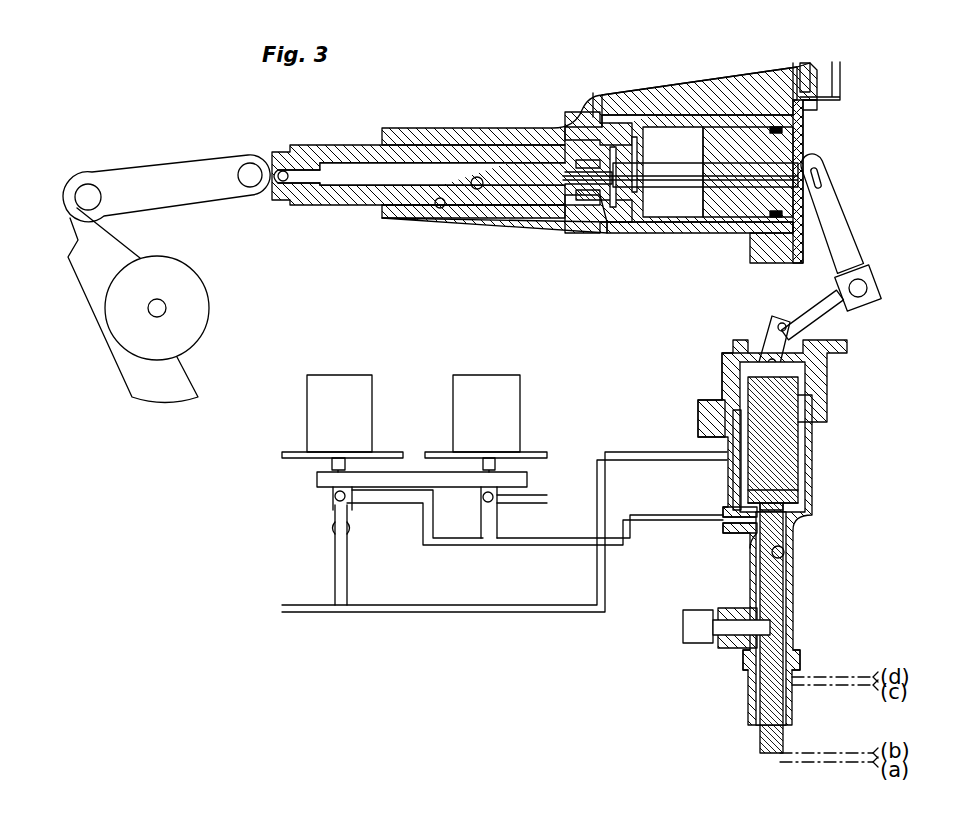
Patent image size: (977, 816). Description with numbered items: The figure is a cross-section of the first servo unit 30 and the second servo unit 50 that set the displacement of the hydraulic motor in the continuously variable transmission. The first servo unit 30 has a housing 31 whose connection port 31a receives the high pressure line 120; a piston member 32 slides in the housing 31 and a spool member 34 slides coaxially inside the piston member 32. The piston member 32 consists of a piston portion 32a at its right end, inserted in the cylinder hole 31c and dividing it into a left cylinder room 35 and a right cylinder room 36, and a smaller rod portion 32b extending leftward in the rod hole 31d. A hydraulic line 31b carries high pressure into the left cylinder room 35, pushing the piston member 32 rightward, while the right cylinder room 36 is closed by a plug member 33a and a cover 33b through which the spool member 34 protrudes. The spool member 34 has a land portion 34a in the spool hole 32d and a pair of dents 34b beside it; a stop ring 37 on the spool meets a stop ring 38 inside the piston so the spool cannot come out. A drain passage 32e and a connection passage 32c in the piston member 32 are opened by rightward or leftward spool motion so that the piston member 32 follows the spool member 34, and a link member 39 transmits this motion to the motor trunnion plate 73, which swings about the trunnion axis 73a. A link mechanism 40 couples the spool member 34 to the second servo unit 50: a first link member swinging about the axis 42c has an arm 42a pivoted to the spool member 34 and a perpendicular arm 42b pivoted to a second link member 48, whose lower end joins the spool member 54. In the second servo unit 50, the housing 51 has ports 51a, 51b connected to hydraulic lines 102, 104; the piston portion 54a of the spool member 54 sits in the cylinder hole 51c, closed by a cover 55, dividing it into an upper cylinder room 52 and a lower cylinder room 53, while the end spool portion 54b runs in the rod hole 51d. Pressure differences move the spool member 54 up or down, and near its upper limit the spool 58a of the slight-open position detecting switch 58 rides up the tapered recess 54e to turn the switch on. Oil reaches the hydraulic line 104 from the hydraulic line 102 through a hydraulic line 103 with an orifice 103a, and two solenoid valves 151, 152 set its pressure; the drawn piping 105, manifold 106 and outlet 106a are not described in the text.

The first servo unit 30 is at (540, 68).
The housing 31 is at (444, 128).
The connection port 31a is at (806, 70).
The hydraulic line 31b is at (680, 100).
The cylinder hole 31c is at (693, 236).
The rod hole 31d is at (445, 208).
The piston member 32 is at (318, 145).
The piston portion 32a is at (604, 228).
The rod portion 32b is at (362, 207).
The connection passage 32c is at (568, 130).
The spool hole 32d is at (480, 190).
The drain passage 32e is at (583, 205).
The plug member 33a is at (806, 142).
The cover 33b is at (818, 108).
The spool member 34 is at (660, 190).
The land portion 34a is at (575, 190).
The dents 34b is at (575, 150).
The left cylinder room 35 is at (596, 232).
The right cylinder room 36 is at (688, 150).
The stop ring 37 is at (614, 210).
The stop ring 38 is at (636, 195).
The link member 39 is at (160, 170).
The link mechanism 40 is at (893, 252).
The arm 42a is at (838, 222).
The arm 42b is at (818, 318).
The axis 42c is at (835, 288).
The second link member 48 is at (760, 325).
The second servo unit 50 is at (862, 530).
The housing 51 is at (812, 476).
The port 51a is at (698, 430).
The port 51b is at (722, 528).
The cylinder hole 51c is at (812, 428).
The rod hole 51d is at (785, 556).
The upper cylinder room 52 is at (733, 465).
The lower cylinder room 53 is at (723, 510).
The spool member 54 is at (800, 458).
The piston portion 54a is at (800, 500).
The end spool portion 54b is at (785, 590).
The recess 54e is at (795, 660).
The cover 55 is at (722, 358).
The slight-open position detecting switch 58 is at (695, 640).
The spool 58a is at (740, 638).
The motor trunnion plate 73 is at (182, 398).
The trunnion axis 73a is at (160, 310).
The hydraulic line 102 is at (470, 613).
The hydraulic line 103 is at (335, 562).
The orifice 103a is at (348, 530).
The hydraulic line 104 is at (512, 546).
The valve 105 is at (482, 510).
The manifold bar 106 is at (532, 490).
The manifold outlet 106a is at (515, 505).
The high pressure line 120 is at (842, 72).
The solenoid valve 151 is at (368, 375).
The solenoid valve 152 is at (512, 375).